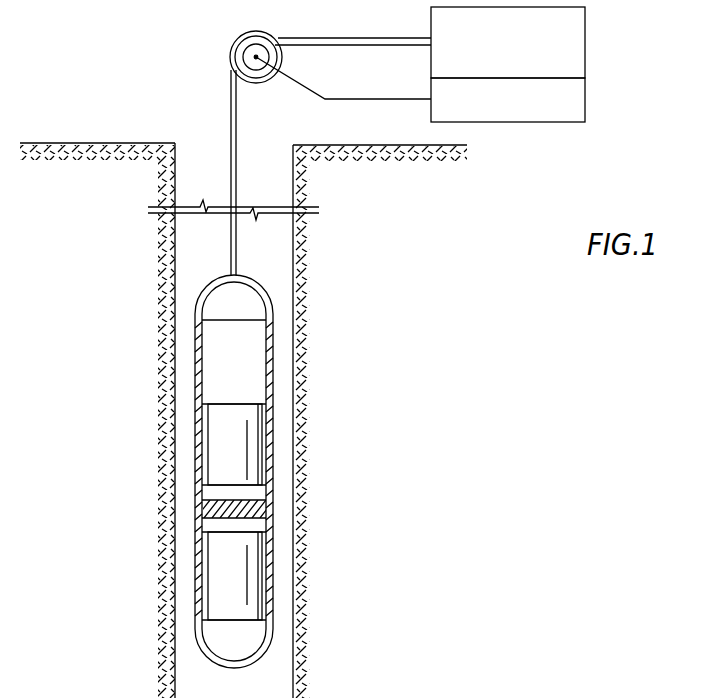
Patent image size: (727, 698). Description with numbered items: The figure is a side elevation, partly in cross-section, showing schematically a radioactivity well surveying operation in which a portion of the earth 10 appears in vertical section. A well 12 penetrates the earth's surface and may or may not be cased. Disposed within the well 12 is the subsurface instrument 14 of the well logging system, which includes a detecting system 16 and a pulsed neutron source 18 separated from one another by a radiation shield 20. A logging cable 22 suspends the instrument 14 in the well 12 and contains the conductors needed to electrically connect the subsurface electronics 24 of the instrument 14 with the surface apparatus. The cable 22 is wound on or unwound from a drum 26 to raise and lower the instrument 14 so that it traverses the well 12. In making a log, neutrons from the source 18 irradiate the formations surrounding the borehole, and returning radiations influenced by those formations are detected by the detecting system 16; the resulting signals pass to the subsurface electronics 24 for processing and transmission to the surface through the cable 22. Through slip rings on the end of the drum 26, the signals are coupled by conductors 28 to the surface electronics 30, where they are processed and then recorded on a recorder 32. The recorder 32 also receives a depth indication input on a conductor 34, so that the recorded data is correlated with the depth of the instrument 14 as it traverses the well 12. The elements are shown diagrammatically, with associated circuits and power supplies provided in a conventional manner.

The earth 10 is at (78, 143).
The well 12 is at (203, 157).
The subsurface instrument 14 is at (200, 286).
The detecting system 16 is at (250, 447).
The pulsed neutron source 18 is at (252, 585).
The radiation shield 20 is at (257, 510).
The logging cable 22 is at (236, 175).
The subsurface electronics 24 is at (255, 348).
The drum 26 is at (232, 44).
The conductors 28 is at (361, 44).
The surface electronics 30 is at (585, 40).
The recorder 32 is at (585, 100).
The conductor 34 is at (379, 102).